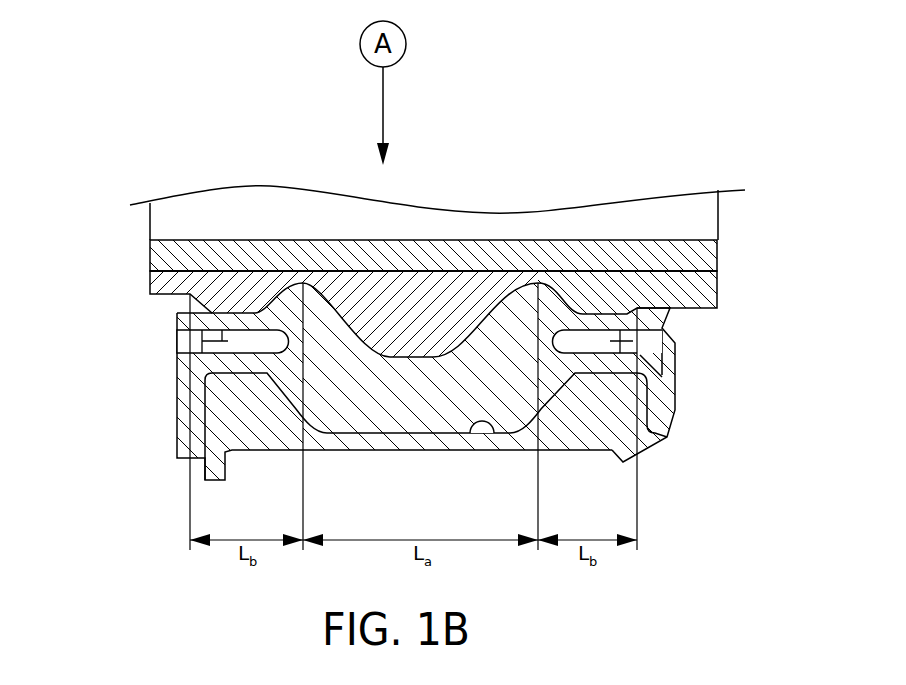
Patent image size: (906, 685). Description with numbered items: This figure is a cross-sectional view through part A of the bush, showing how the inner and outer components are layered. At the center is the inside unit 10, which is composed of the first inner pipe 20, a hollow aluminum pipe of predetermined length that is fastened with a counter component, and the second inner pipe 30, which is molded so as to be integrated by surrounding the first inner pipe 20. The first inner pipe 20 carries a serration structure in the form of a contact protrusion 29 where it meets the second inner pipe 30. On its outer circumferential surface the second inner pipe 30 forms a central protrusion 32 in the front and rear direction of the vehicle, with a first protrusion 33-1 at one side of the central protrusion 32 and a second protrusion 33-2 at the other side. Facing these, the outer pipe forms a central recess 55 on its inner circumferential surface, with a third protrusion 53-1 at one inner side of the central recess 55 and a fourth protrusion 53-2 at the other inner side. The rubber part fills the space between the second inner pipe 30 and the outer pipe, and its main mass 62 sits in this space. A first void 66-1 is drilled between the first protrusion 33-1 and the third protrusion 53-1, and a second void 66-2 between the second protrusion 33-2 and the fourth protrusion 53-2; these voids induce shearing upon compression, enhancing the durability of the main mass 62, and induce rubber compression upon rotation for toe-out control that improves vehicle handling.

The inside unit 10 is at (60, 260).
The first inner pipe 20 is at (163, 283).
The second inner pipe 30 is at (392, 247).
The contact protrusion 29 is at (420, 265).
The central protrusion 32 is at (453, 323).
The first protrusion 33-1 is at (230, 300).
The second protrusion 33-2 is at (612, 297).
The third protrusion 53-1 is at (243, 413).
The fourth protrusion 53-2 is at (610, 415).
The central recess 55 is at (495, 433).
The main mass 62 is at (417, 392).
The first void 66-1 is at (195, 337).
The second void 66-2 is at (632, 346).